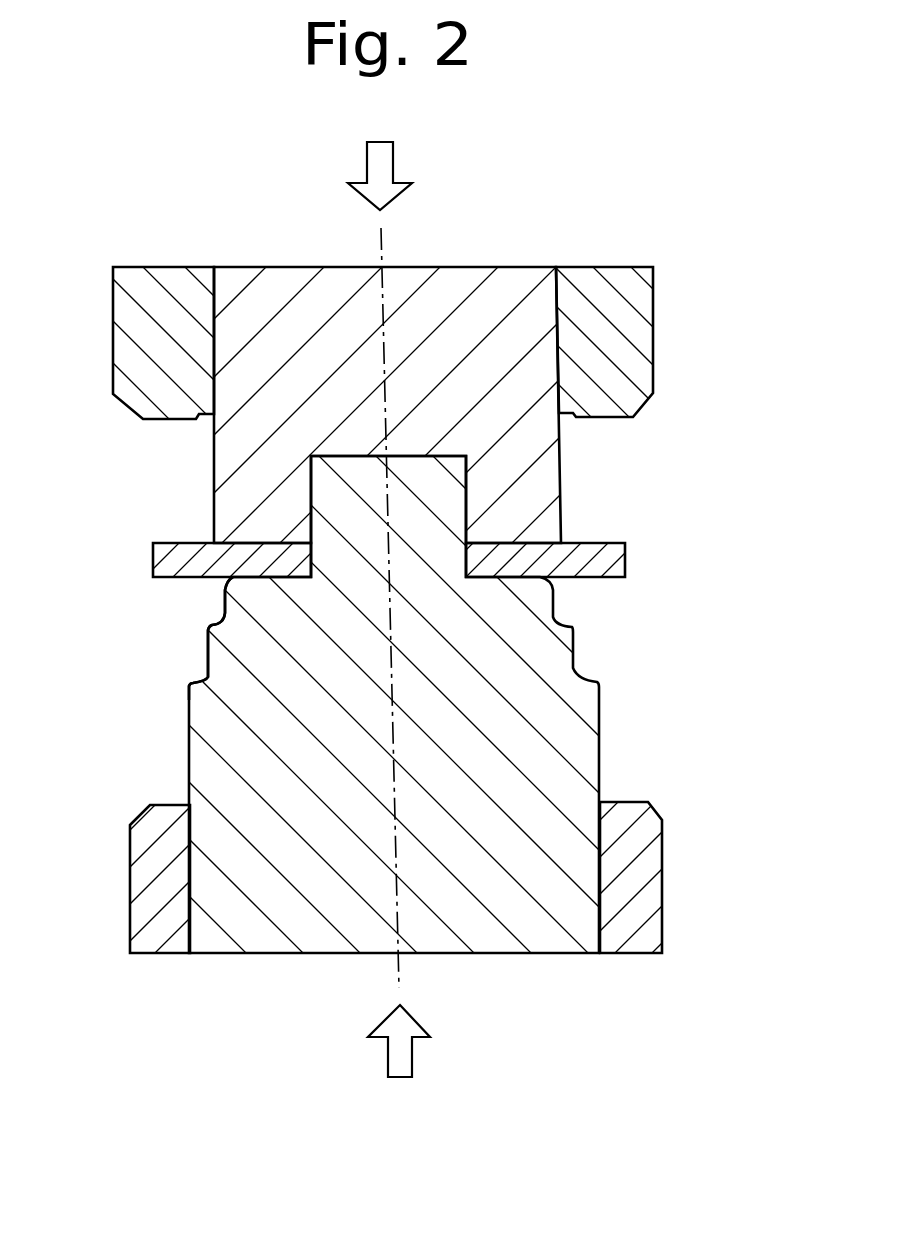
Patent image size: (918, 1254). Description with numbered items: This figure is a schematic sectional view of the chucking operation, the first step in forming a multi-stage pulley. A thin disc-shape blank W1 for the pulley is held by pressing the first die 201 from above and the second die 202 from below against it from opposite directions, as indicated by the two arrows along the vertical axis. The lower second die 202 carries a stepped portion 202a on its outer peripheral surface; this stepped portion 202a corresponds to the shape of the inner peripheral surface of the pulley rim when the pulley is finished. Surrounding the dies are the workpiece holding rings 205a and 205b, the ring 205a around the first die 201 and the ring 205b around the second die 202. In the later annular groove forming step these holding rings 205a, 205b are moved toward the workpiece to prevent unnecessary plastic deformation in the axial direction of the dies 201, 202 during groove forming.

The first die 201 is at (257, 313).
The second die 202 is at (270, 892).
The stepped portion 202a is at (193, 647).
The workpiece holding ring 205a is at (640, 333).
The workpiece holding ring 205b is at (643, 877).
The disc-shape blank W1 is at (173, 559).